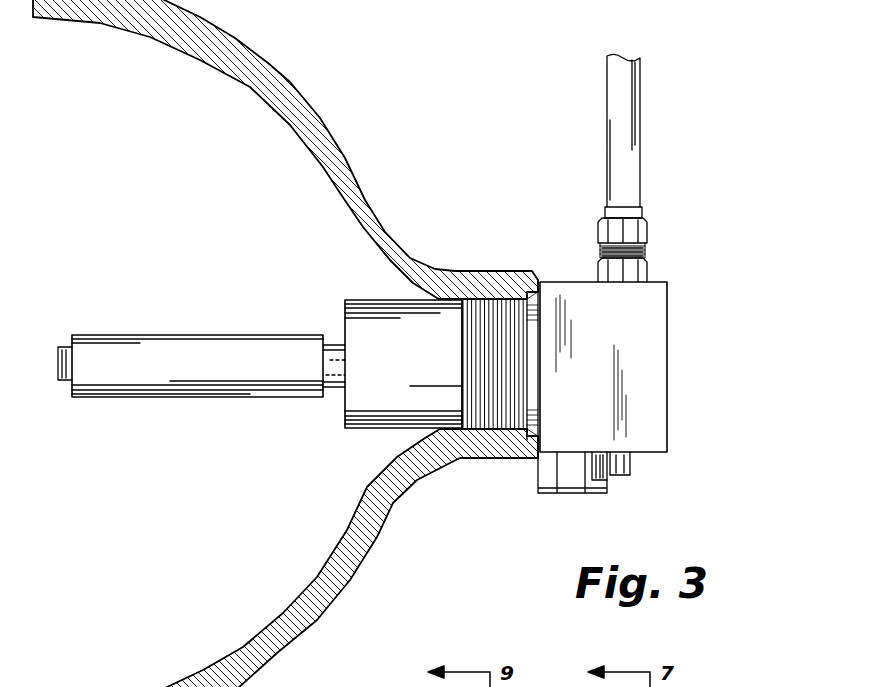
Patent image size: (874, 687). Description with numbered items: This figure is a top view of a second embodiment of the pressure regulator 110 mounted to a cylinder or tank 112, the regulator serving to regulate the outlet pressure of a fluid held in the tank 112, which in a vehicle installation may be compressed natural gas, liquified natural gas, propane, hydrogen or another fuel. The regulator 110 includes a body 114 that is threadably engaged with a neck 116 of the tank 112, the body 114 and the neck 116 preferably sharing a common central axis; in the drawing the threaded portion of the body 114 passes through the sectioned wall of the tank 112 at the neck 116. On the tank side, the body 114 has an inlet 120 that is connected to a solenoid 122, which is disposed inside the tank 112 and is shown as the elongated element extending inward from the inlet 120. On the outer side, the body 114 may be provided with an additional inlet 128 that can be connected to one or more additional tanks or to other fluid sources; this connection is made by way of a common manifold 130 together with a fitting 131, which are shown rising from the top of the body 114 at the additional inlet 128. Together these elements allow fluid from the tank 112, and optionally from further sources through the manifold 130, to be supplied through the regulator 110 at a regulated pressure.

The pressure regulator 110 is at (706, 339).
The tank 112 is at (365, 177).
The body 114 is at (403, 430).
The neck 116 is at (505, 268).
The inlet 120 is at (322, 384).
The solenoid 122 is at (252, 333).
The additional inlet 128 is at (645, 293).
The common manifold 130 is at (642, 120).
The fitting 131 is at (648, 250).